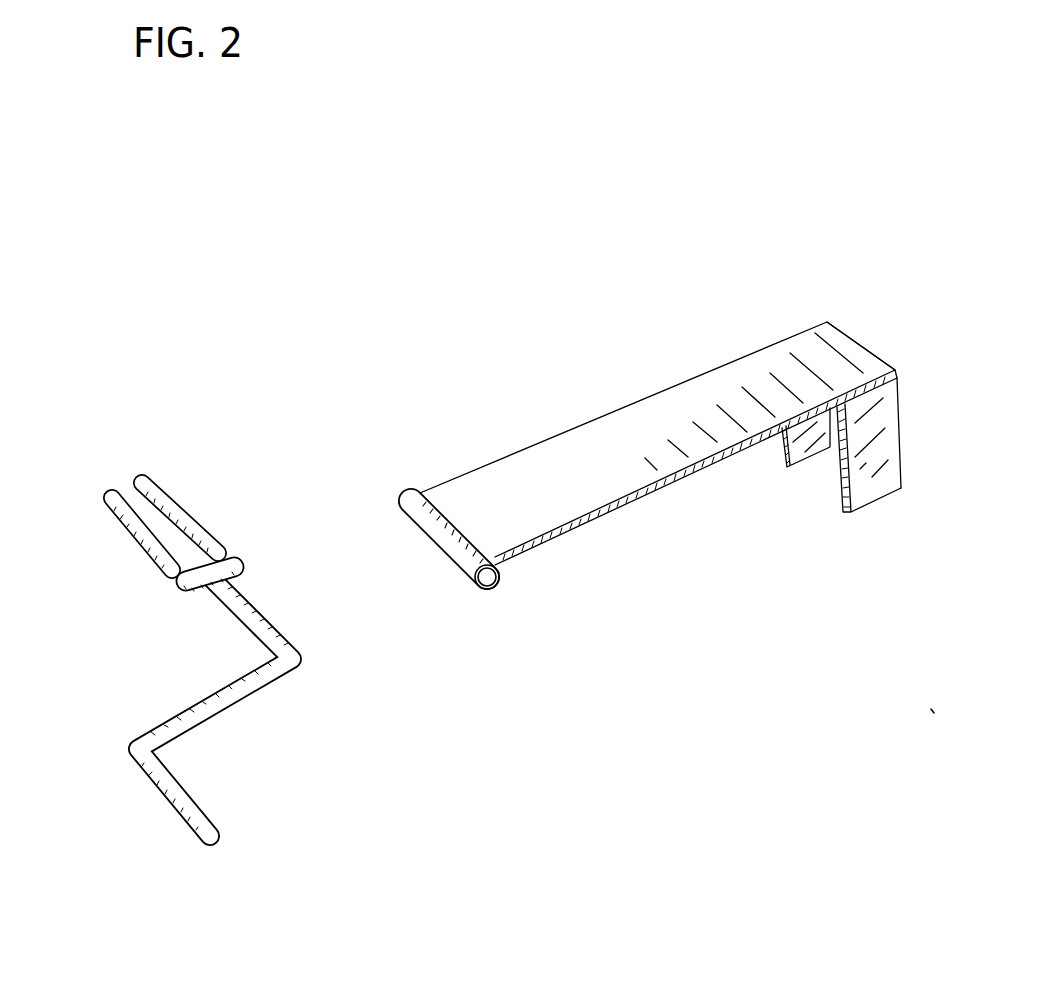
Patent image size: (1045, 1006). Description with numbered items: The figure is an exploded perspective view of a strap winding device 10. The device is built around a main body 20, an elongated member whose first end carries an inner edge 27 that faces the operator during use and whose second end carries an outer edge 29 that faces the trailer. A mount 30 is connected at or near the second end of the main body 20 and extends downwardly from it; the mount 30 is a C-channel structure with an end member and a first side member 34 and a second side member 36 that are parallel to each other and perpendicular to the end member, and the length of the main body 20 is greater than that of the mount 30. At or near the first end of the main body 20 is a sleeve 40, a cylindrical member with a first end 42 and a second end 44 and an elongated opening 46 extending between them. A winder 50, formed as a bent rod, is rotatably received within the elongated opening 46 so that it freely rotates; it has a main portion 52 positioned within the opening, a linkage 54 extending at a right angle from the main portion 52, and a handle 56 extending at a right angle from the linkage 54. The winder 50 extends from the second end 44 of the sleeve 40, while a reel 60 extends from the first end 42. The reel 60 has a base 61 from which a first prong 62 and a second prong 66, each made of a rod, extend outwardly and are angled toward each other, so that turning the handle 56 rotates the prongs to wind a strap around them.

The strap winding device 10 is at (507, 197).
The main body 20 is at (642, 418).
The inner edge 27 is at (440, 548).
The outer edge 29 is at (862, 342).
The mount 30 is at (900, 428).
The first side member 34 is at (805, 452).
The second side member 36 is at (870, 457).
The sleeve 40 is at (442, 548).
The first end 42 is at (498, 572).
The second end 44 is at (406, 490).
The elongated opening 46 is at (483, 590).
The winder 50 is at (277, 694).
The main portion 52 is at (262, 607).
The linkage 54 is at (212, 703).
The handle 56 is at (168, 795).
The reel 60 is at (220, 519).
The base 61 is at (215, 548).
The first prong 62 is at (130, 517).
The second prong 66 is at (175, 497).